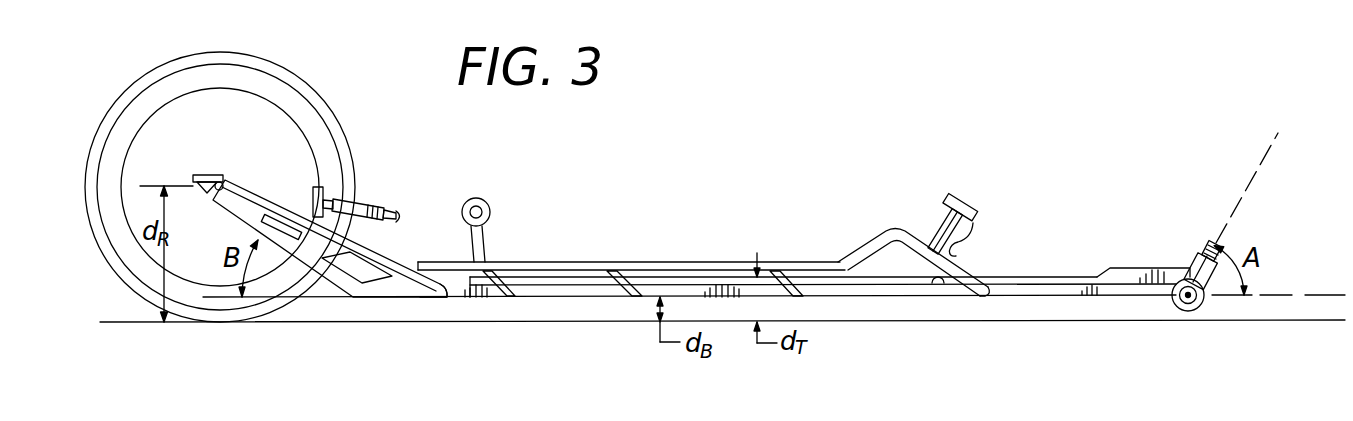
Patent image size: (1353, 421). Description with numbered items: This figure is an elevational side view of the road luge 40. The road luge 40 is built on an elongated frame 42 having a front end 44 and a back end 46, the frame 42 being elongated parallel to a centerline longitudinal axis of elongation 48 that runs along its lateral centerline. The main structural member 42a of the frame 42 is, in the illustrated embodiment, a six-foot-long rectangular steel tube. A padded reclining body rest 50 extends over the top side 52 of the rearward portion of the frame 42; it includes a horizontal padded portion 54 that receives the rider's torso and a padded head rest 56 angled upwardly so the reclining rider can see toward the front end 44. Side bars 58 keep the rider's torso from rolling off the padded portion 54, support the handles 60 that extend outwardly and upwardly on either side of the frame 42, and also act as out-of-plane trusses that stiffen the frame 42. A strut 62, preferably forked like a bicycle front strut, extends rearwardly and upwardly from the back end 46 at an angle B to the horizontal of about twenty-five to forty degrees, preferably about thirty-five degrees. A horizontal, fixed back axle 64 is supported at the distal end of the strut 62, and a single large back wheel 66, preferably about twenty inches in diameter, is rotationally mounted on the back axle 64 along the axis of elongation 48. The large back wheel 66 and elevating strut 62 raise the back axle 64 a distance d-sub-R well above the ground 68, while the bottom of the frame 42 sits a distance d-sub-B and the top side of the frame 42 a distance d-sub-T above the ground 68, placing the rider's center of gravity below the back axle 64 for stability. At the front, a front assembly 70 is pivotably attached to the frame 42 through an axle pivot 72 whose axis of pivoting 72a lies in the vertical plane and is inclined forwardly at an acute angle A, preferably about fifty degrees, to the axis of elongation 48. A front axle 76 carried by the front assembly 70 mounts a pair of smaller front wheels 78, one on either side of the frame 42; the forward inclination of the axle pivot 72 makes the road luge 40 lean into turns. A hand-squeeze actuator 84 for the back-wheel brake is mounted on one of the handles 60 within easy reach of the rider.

The road luge 40 is at (742, 193).
The frame 42 is at (685, 285).
The main structural member 42a is at (877, 290).
The front end 44 is at (1158, 290).
The back end 46 is at (425, 292).
The centerline longitudinal axis of elongation 48 is at (1318, 293).
The padded reclining body rest 50 is at (562, 280).
The top side 52 is at (938, 283).
The horizontal padded portion 54 is at (740, 285).
The padded head rest 56 is at (481, 199).
The side bars 58 is at (863, 249).
The handles 60 is at (935, 222).
The strut 62 is at (247, 203).
The back axle 64 is at (220, 177).
The back wheel 66 is at (310, 98).
The ground 68 is at (133, 313).
The front assembly 70 is at (1212, 310).
The axle pivot 72 is at (1192, 263).
The axis of pivoting 72a is at (1251, 172).
The front axle 76 is at (1192, 302).
The front wheels 78 is at (1189, 303).
The hand-squeeze actuator 84 is at (977, 238).